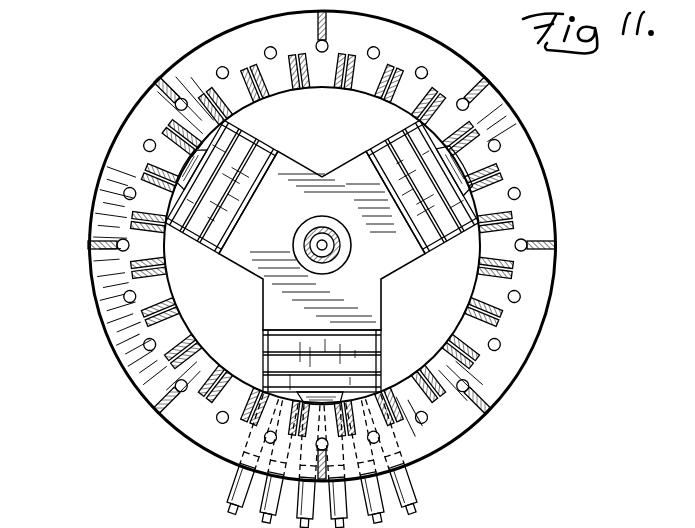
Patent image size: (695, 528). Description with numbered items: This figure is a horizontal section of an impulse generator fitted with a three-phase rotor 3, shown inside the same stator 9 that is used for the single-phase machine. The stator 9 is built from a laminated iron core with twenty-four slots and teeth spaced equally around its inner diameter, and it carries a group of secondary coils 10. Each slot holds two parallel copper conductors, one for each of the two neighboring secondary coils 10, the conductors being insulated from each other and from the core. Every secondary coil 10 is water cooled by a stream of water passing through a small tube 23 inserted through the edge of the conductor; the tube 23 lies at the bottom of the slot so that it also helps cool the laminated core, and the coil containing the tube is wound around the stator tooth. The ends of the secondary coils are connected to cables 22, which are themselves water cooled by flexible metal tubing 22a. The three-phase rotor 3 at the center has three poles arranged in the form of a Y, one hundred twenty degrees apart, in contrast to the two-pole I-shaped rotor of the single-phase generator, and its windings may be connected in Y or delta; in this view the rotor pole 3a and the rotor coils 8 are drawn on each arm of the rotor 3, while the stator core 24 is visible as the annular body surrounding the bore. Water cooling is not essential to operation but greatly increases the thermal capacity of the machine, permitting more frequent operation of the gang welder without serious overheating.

The three-phase rotor 3 is at (247, 266).
The rotor pole shoe 3a is at (470, 163).
The rotor field coil 8 is at (376, 141).
The stator 9 is at (90, 198).
The secondary coils 10 is at (146, 168).
The cables 22 is at (407, 479).
The flexible metal tubing 22a is at (408, 502).
The small tube 23 is at (168, 126).
The stator core 24 is at (100, 225).